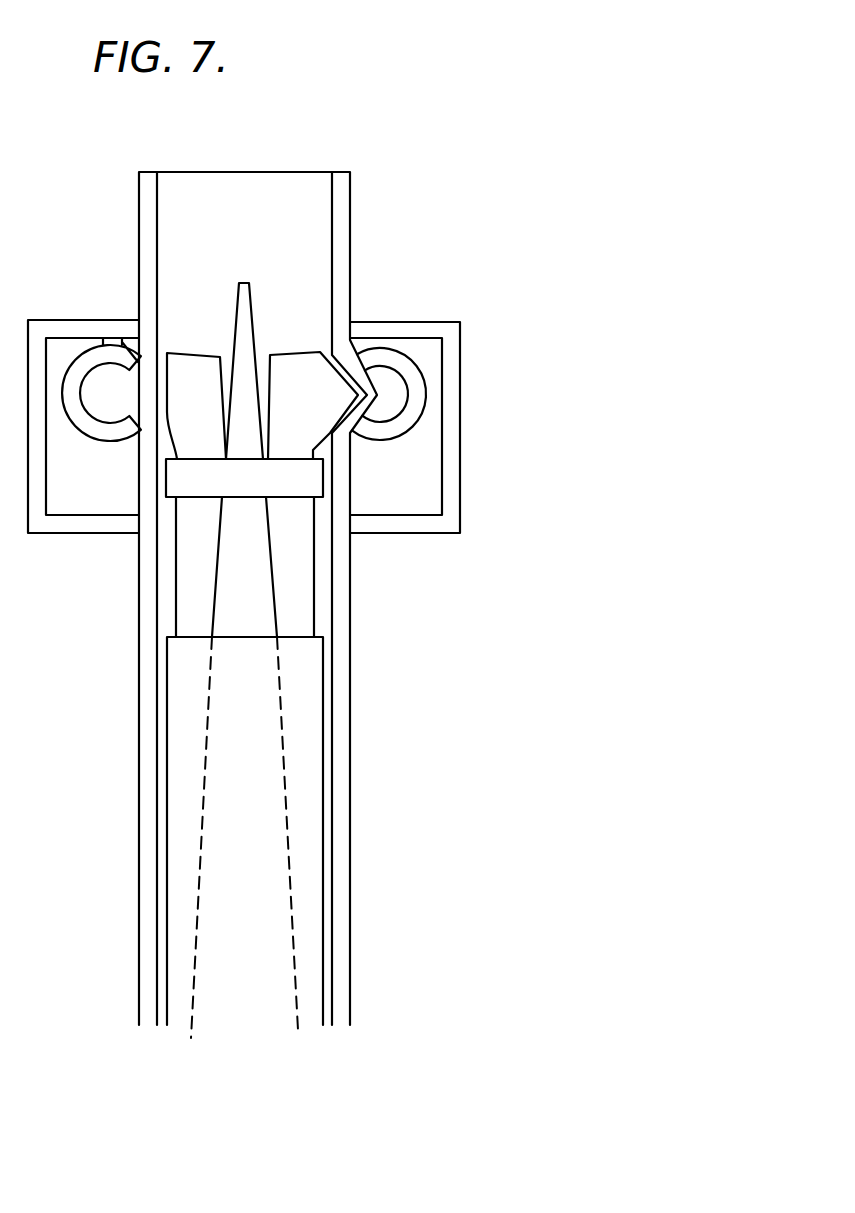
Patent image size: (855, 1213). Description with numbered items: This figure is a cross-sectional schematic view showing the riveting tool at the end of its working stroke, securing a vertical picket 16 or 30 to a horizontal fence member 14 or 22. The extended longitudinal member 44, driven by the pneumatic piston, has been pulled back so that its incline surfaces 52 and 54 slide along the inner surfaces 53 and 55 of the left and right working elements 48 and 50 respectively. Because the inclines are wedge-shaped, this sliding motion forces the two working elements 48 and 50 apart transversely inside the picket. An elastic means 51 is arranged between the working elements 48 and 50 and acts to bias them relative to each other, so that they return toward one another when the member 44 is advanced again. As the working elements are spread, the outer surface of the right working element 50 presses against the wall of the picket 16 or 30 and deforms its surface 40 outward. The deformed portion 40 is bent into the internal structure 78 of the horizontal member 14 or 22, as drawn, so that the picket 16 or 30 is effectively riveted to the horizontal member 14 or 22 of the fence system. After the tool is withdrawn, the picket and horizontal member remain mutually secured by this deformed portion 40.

The picket 16 is at (324, 591).
The picket 30 is at (337, 202).
The working element 48 is at (193, 372).
The working element 50 is at (302, 372).
The surface of picket 40 is at (353, 363).
The internal structure 78 is at (423, 393).
The horizontal fence member 14 is at (321, 443).
The horizontal fence member 22 is at (450, 522).
The elastic means 51 is at (303, 482).
The inner surface 53 is at (217, 568).
The inner surface 55 is at (272, 567).
The extended longitudinal member 44 is at (257, 803).
The incline surface 52 is at (200, 895).
The incline surface 54 is at (288, 868).